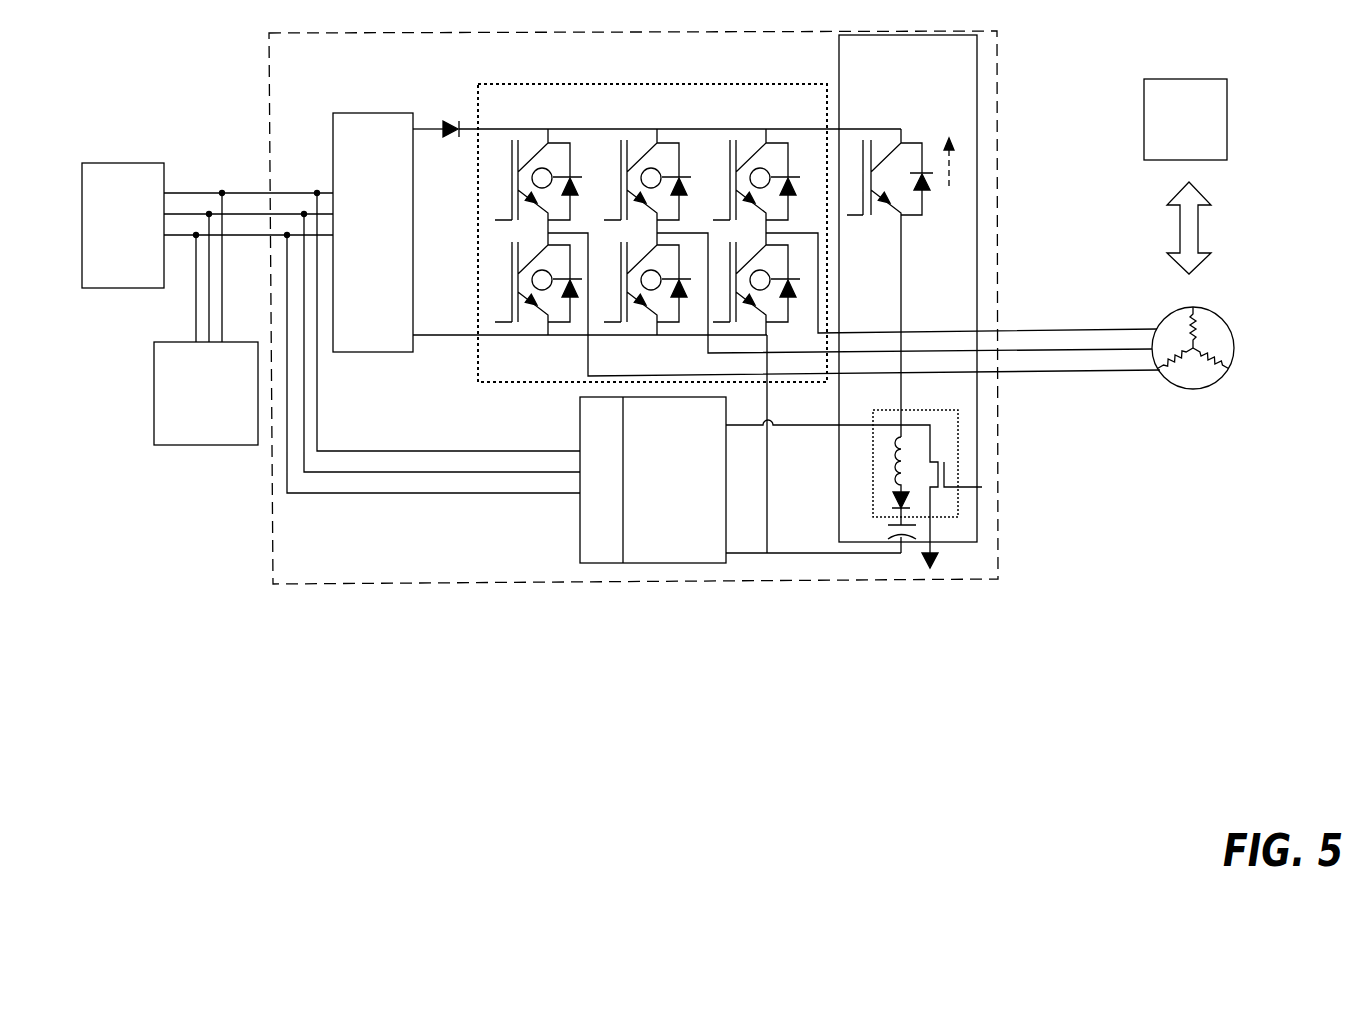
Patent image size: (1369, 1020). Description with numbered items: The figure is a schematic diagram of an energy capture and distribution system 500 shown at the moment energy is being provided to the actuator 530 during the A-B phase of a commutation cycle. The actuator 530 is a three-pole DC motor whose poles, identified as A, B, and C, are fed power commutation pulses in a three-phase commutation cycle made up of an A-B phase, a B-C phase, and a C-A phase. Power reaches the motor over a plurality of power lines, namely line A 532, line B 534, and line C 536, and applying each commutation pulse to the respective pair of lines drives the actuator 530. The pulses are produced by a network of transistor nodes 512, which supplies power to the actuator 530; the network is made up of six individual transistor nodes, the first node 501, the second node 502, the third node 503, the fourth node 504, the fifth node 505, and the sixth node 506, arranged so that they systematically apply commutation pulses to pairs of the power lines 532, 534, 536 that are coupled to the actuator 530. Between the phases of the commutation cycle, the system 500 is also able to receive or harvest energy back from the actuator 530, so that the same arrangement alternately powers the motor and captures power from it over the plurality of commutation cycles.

The energy capture and distribution system 500 is at (95, 99).
The network of transistor nodes 512 is at (650, 84).
The node 1 501 is at (586, 149).
The node 2 502 is at (693, 149).
The node 3 503 is at (797, 149).
The node 4 504 is at (540, 320).
The node 5 505 is at (643, 320).
The node 6 506 is at (750, 320).
The actuator 530 is at (1203, 307).
The line A 532 is at (1067, 371).
The line B 534 is at (1040, 350).
The line C 536 is at (1007, 331).